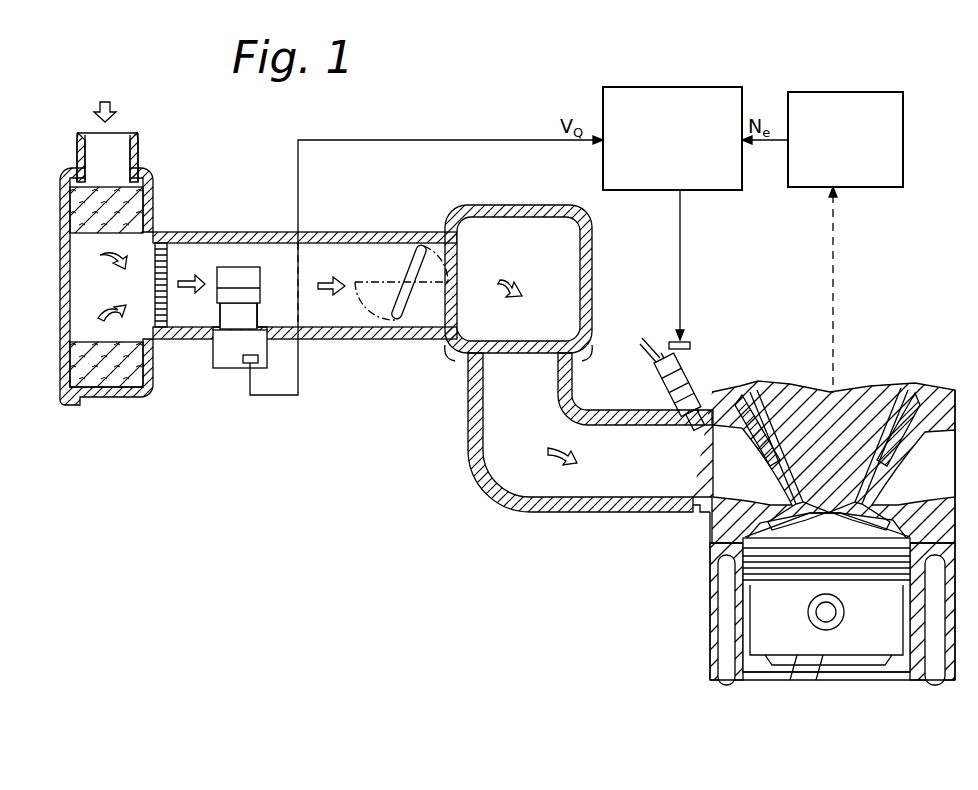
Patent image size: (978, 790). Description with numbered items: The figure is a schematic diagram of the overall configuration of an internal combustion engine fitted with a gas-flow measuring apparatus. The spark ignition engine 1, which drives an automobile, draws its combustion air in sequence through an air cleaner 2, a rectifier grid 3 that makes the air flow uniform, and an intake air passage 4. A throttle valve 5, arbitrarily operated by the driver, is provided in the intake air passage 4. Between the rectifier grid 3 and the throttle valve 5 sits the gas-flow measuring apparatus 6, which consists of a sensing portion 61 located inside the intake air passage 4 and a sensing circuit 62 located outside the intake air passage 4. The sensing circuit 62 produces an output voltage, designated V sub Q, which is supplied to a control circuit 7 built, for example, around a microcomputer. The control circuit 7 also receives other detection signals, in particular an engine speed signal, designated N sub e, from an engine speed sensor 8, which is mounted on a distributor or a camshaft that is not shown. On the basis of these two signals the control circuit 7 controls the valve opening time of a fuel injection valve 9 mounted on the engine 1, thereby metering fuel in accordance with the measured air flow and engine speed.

The spark ignition engine 1 is at (712, 628).
The air cleaner 2 is at (64, 386).
The rectifier grid 3 is at (168, 246).
The intake air passage 4 is at (350, 342).
The throttle valve 5 is at (414, 268).
The gas-flow measuring apparatus 6 is at (225, 325).
The sensing portion 61 is at (248, 266).
The sensing circuit 62 is at (215, 358).
The control circuit 7 is at (698, 88).
The engine speed sensor 8 is at (857, 95).
The fuel injection valve 9 is at (672, 370).